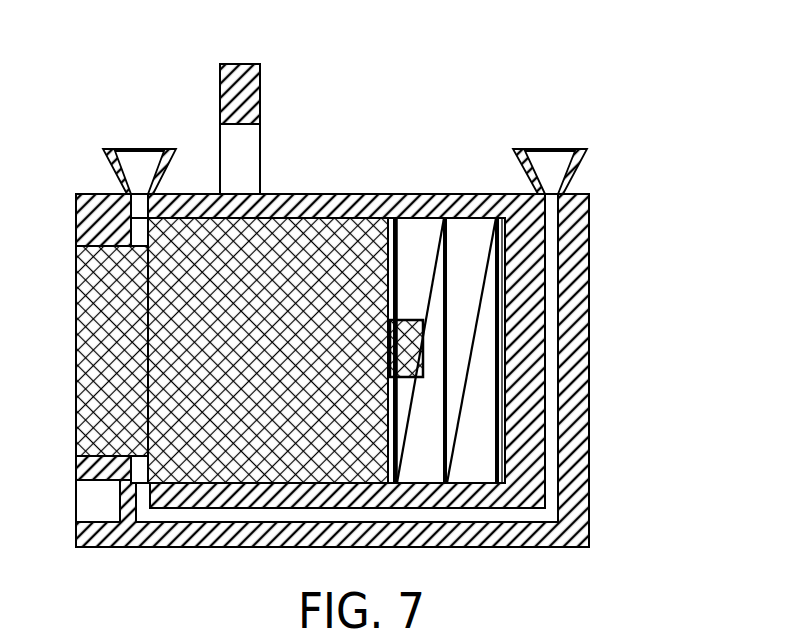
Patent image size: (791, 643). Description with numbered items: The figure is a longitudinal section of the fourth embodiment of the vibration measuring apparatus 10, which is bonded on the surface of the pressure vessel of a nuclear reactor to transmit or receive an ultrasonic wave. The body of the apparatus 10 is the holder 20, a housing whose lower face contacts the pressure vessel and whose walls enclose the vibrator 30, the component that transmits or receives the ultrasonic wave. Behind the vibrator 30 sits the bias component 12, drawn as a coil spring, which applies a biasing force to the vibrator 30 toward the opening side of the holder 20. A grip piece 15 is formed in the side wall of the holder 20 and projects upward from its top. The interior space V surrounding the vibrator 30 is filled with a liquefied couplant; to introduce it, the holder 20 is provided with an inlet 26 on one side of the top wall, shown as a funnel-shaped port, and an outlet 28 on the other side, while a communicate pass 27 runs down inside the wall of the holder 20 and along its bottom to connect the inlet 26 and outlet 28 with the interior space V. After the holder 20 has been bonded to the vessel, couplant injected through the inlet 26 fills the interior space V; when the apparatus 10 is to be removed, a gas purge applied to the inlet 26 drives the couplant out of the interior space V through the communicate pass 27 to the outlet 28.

The vibration measuring apparatus 10 is at (84, 74).
The bias component 12 is at (445, 215).
The grip piece 15 is at (261, 93).
The holder 20 is at (589, 375).
The inlet 26 is at (146, 149).
The communicate pass 27 is at (550, 290).
The outlet 28 is at (556, 149).
The vibrator 30 is at (340, 250).
The interior space V is at (413, 240).